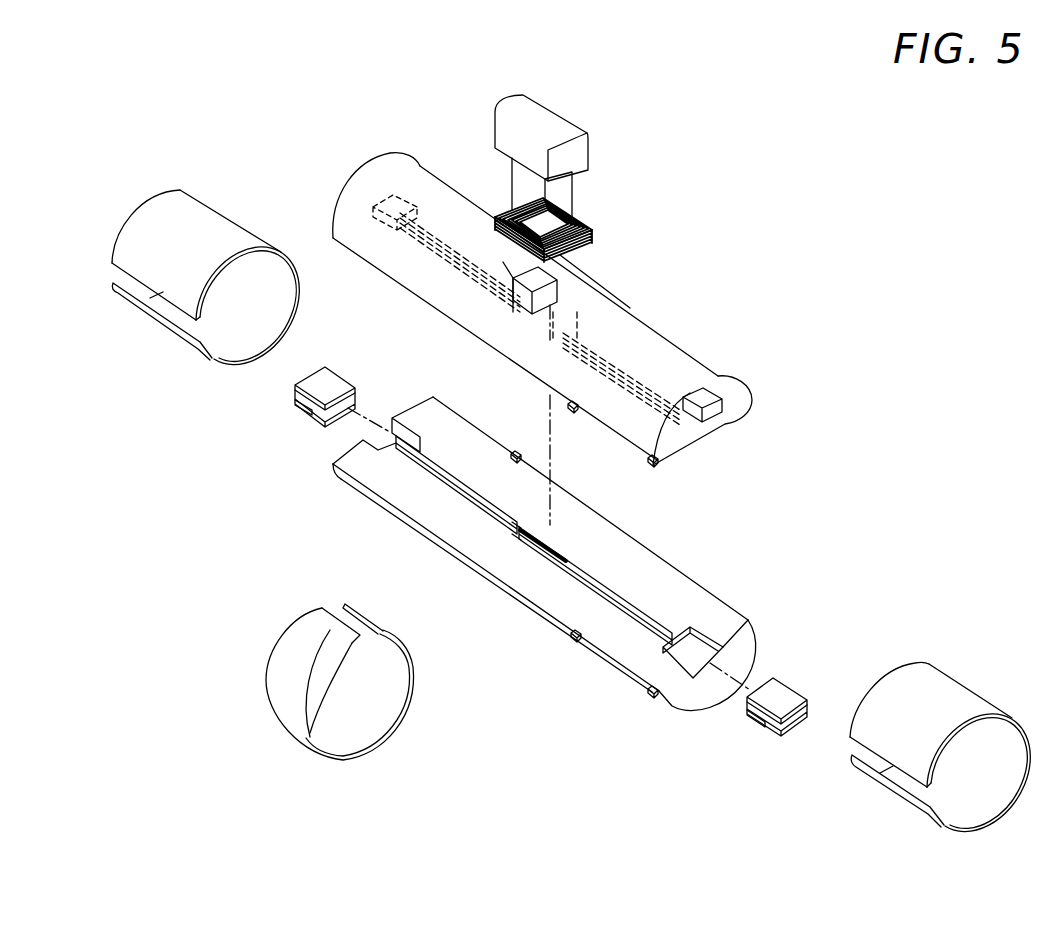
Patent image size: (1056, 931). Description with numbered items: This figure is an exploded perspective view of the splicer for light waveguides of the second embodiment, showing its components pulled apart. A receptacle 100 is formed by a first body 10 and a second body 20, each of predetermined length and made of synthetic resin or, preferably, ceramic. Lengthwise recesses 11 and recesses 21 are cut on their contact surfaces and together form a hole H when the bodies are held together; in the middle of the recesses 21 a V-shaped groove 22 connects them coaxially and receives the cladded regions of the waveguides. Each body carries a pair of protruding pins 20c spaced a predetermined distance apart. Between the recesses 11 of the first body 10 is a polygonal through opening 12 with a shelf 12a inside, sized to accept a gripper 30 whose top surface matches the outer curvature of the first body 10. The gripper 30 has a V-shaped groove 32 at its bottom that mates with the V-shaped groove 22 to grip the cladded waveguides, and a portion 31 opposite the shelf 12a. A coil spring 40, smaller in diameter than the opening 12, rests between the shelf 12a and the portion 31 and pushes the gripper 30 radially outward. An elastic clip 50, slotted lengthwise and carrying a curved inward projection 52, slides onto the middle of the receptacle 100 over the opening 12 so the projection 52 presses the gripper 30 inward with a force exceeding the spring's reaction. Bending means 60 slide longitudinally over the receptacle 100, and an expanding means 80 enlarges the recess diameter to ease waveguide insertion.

The first body 10 is at (705, 329).
The recesses 11 is at (437, 245).
The opening 12 is at (560, 274).
The shelf 12a is at (562, 269).
The second body 20 is at (471, 550).
The protruding pins 20c is at (517, 452).
The recesses 21 is at (445, 480).
The V-shaped groove 22 is at (560, 545).
The gripper 30 is at (553, 138).
The portion 31 is at (495, 148).
The V-shaped groove 32 is at (557, 208).
The spring 40 is at (600, 225).
The elastic clip 50 is at (370, 733).
The projection 52 is at (342, 662).
The bending means 60 is at (146, 313).
The expanding means 80 is at (316, 396).
The receptacle 100 is at (762, 573).
The hole H is at (470, 494).